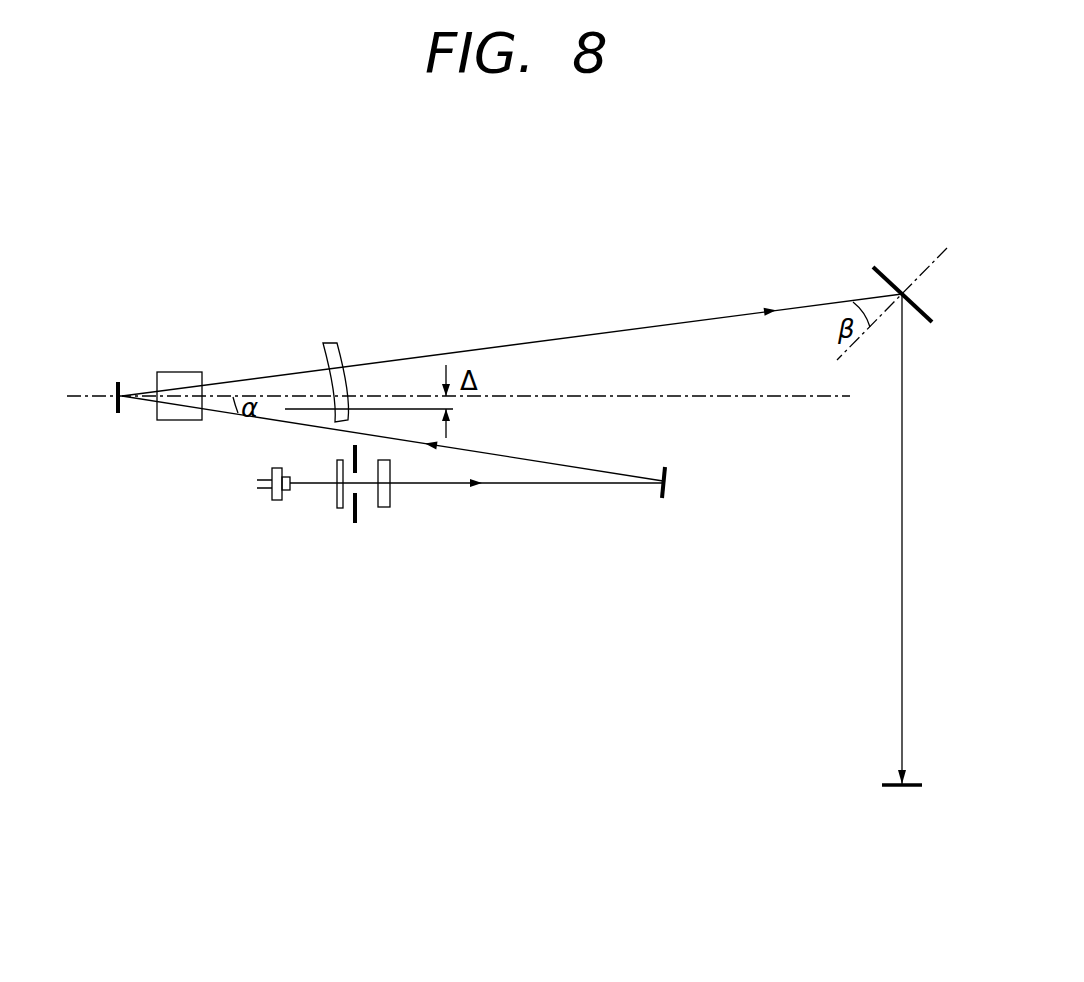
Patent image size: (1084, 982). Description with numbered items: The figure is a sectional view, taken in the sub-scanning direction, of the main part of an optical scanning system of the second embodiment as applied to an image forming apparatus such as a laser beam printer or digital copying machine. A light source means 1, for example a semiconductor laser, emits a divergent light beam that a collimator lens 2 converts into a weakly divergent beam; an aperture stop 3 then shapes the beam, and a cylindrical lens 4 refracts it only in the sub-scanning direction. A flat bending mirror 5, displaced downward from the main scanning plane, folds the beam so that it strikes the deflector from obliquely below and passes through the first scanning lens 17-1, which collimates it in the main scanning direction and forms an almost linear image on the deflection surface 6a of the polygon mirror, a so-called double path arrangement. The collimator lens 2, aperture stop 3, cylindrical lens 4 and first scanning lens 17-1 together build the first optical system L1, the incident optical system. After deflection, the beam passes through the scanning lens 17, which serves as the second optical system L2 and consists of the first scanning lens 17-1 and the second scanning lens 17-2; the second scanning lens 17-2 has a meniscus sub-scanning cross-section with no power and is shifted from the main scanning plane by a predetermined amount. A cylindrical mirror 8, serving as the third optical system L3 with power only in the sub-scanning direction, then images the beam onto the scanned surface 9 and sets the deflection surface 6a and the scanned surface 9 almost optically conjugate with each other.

The light source means 1 is at (277, 502).
The collimator lens 2 is at (338, 510).
The aperture stop 3 is at (360, 515).
The cylindrical lens 4 is at (392, 497).
The bending mirror 5 is at (667, 473).
The deflection surface 6a is at (120, 382).
The cylindrical mirror 8 is at (885, 268).
The scanned surface 9 is at (890, 788).
The scanning lens 17 is at (333, 262).
The first scanning lens 17-1 is at (188, 372).
The second scanning lens 17-2 is at (330, 343).
The first optical system L1 is at (170, 560).
The second optical system L2 is at (327, 213).
The third optical system L3 is at (953, 220).